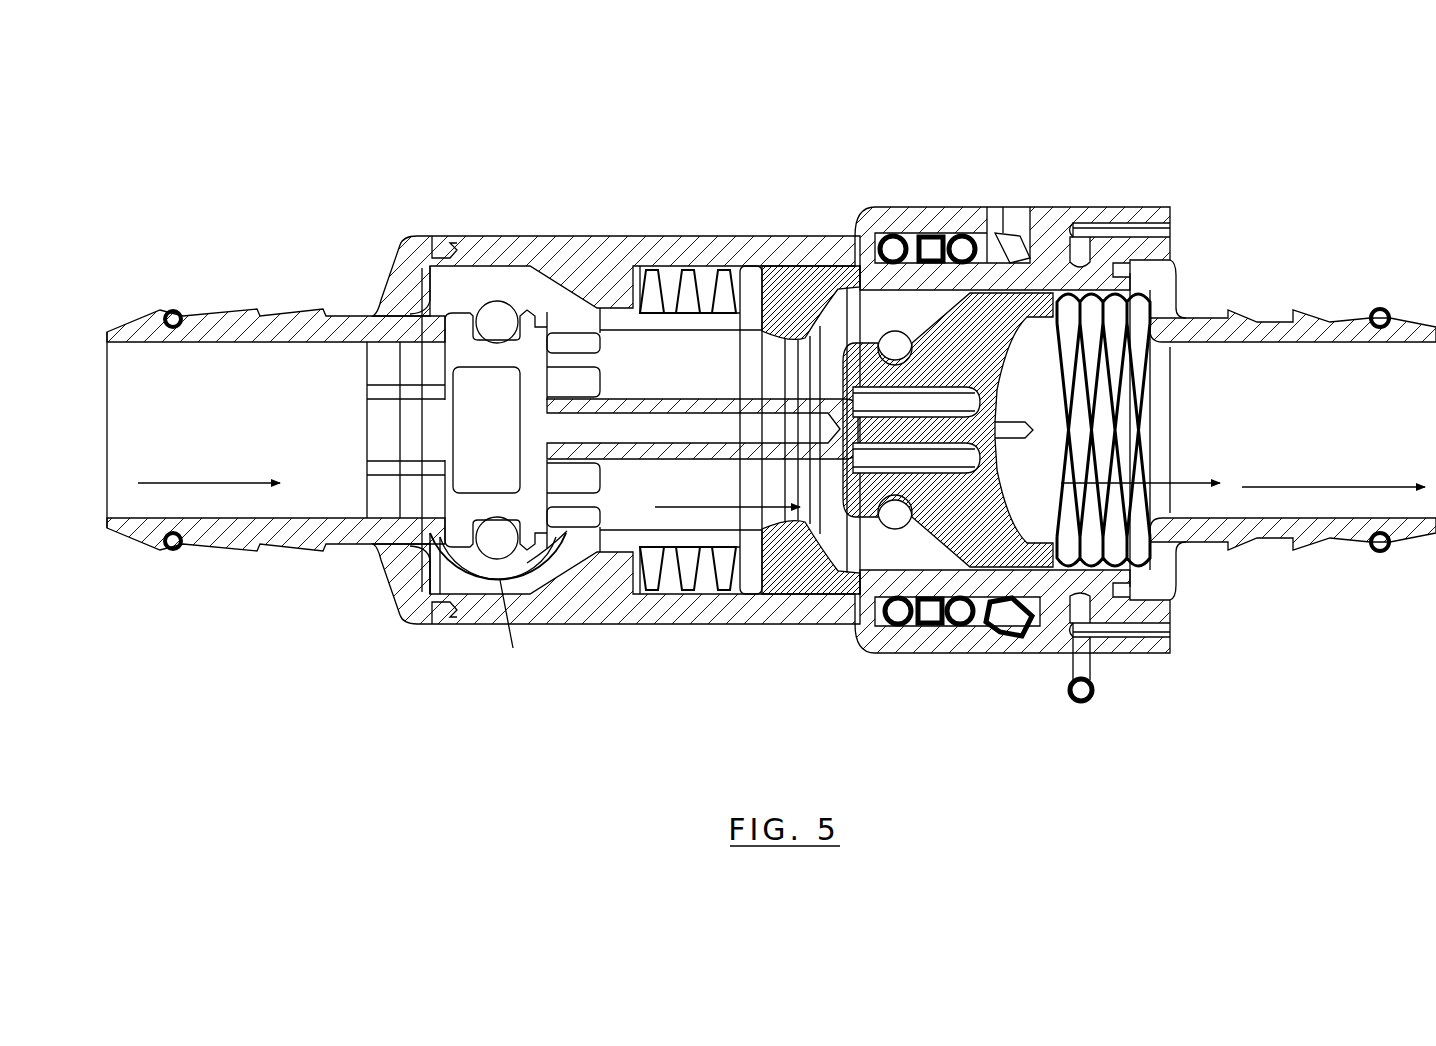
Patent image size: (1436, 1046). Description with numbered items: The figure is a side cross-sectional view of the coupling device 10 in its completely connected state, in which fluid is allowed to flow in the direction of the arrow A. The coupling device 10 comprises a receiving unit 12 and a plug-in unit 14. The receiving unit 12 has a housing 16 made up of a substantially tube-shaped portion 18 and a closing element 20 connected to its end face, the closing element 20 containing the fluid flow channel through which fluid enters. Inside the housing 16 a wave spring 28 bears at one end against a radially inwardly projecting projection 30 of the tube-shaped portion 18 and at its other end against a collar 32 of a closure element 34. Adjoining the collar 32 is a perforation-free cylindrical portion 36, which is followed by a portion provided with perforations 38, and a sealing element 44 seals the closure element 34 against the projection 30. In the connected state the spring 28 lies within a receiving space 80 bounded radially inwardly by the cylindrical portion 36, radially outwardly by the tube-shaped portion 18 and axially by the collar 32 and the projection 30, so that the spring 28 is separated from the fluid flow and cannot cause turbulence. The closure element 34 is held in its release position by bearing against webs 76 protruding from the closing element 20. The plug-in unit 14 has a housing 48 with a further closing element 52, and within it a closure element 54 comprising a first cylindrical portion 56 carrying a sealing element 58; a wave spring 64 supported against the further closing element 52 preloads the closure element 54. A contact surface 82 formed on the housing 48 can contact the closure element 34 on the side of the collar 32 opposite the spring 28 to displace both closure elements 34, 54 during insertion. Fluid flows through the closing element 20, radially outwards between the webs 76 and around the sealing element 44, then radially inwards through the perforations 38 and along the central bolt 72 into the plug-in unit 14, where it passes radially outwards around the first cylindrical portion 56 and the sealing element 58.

The coupling device 10 is at (740, 142).
The receiving unit 12 is at (338, 185).
The plug-in unit 14 is at (1238, 222).
The housing 16 is at (425, 637).
The tube-shaped portion 18 is at (927, 633).
The closing element 20 is at (285, 332).
The wave spring 28 is at (670, 290).
The projection 30 is at (601, 280).
The collar 32 is at (747, 265).
The closure element 34 is at (538, 340).
The cylindrical portion 36 is at (665, 573).
The perforations 38 is at (567, 531).
The sealing element 44 is at (490, 312).
The housing 48 is at (1198, 612).
The further closing element 52 is at (1305, 330).
The closure element 54 is at (1003, 307).
The first cylindrical portion 56 is at (860, 343).
The sealing element 58 is at (902, 347).
The wave spring 64 is at (1107, 310).
The central bolt 72 is at (652, 405).
The webs 76 is at (426, 514).
The receiving space 80 is at (718, 590).
The contact surface 82 is at (770, 272).